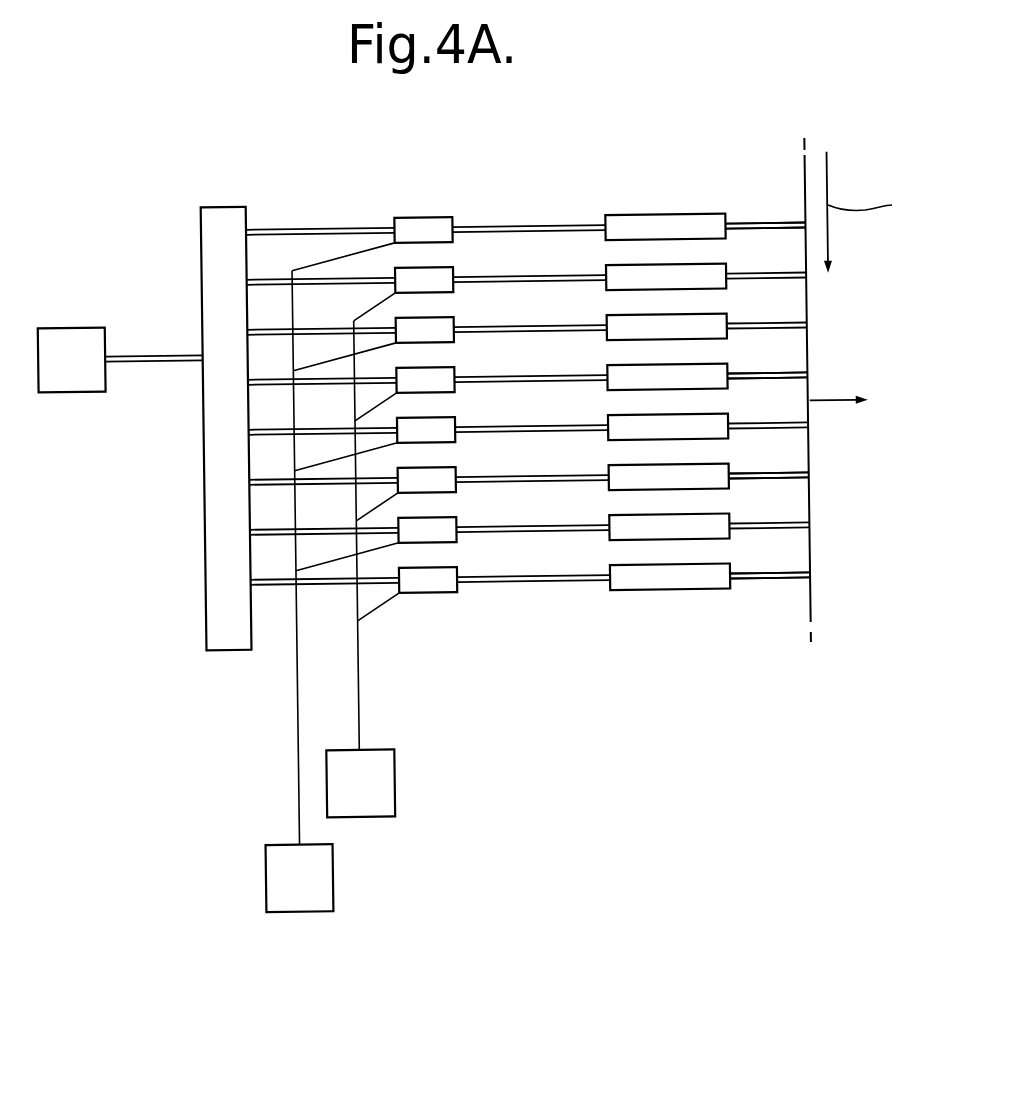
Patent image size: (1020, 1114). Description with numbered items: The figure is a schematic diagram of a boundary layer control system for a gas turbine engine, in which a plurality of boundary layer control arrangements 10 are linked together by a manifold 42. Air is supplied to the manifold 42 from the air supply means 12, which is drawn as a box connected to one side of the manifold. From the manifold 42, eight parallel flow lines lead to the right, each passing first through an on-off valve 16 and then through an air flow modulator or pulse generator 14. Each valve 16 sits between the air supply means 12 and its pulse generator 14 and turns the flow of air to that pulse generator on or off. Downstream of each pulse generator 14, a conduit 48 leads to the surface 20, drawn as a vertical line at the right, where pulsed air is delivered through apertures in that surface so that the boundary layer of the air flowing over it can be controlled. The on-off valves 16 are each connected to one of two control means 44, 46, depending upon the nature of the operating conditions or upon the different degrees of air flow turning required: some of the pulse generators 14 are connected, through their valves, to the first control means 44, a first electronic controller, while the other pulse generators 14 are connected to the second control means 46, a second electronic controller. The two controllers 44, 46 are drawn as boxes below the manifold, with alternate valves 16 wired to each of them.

The boundary layer control arrangement 10 is at (473, 214).
The air supply means 12 is at (74, 402).
The pulse generator 14 is at (668, 220).
The valve 16 is at (408, 322).
The surface 20 is at (812, 454).
The manifold 42 is at (215, 633).
The first control means 44 is at (299, 897).
The second control means 46 is at (367, 802).
The conduit 48 is at (766, 225).